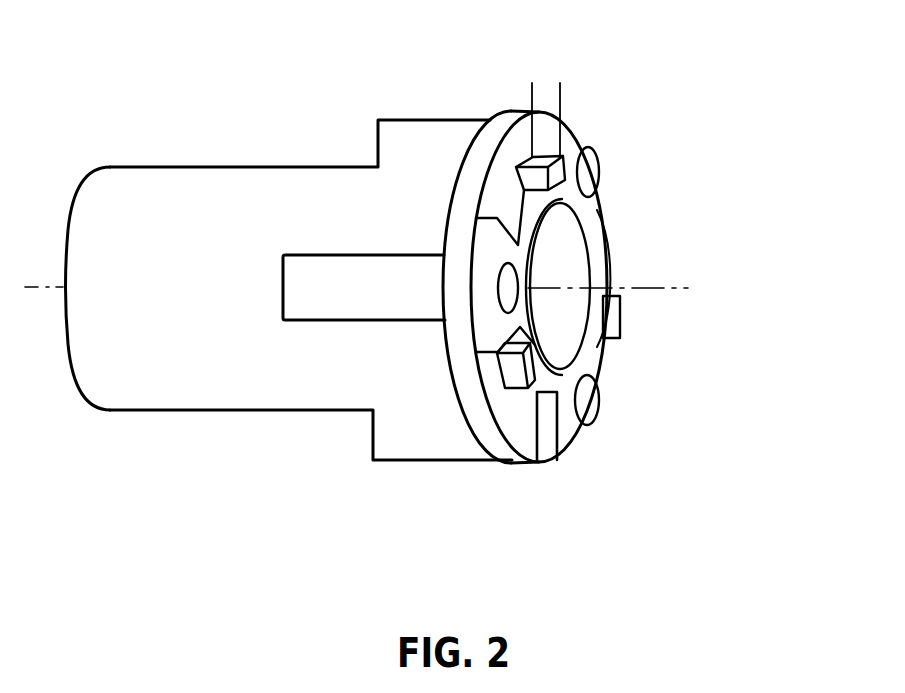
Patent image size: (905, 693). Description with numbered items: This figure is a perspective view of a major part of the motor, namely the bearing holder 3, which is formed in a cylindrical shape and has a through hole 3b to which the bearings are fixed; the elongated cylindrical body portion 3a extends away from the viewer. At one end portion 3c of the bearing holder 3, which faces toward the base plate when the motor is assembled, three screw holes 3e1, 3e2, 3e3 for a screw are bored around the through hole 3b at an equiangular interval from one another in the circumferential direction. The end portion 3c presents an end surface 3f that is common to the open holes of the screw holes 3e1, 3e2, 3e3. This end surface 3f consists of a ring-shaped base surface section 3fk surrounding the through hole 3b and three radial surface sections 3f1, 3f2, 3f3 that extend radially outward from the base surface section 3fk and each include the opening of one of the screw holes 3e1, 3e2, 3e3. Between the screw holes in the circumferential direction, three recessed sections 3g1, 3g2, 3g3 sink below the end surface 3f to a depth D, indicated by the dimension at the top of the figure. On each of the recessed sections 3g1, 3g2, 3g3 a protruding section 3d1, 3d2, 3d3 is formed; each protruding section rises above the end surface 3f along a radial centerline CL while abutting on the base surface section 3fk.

The bearing holder 3 is at (443, 252).
The shaft portion 3a is at (190, 188).
The through hole 3b is at (560, 255).
The end portion 3c is at (815, 90).
The protruding section 3d1 is at (593, 200).
The protruding section 3d2 is at (617, 318).
The protruding section 3d3 is at (593, 368).
The screw hole 3e1 is at (590, 172).
The screw hole 3e2 is at (587, 400).
The screw hole 3e3 is at (510, 284).
The end surface 3f is at (750, 123).
The radial surface section 3f1 is at (583, 133).
The radial surface section 3f2 is at (573, 433).
The radial surface section 3f3 is at (598, 352).
The base surface section 3fk is at (583, 217).
The recessed section 3g1 is at (513, 138).
The recessed section 3g2 is at (540, 362).
The recessed section 3g3 is at (510, 415).
The depth D is at (588, 92).
The centerline CL is at (626, 287).